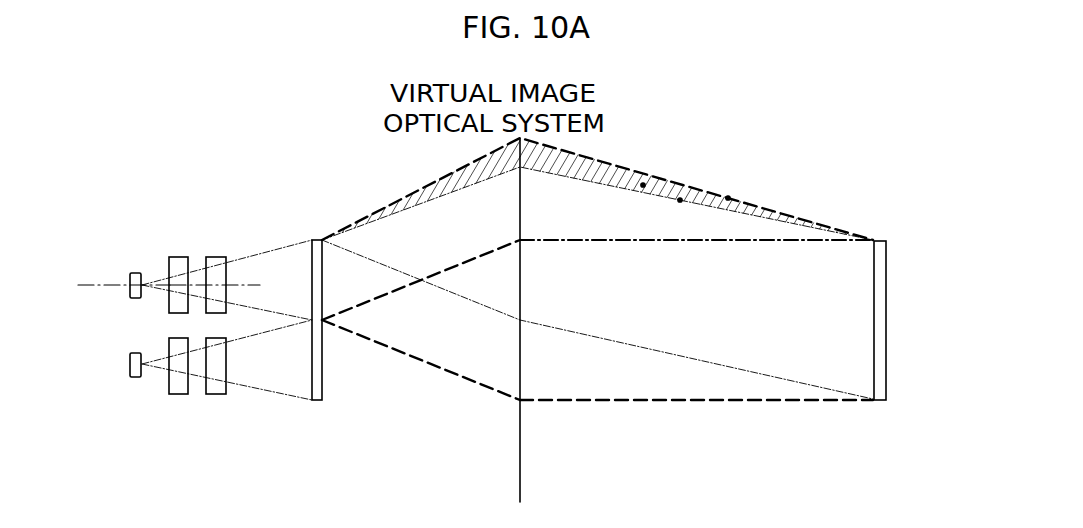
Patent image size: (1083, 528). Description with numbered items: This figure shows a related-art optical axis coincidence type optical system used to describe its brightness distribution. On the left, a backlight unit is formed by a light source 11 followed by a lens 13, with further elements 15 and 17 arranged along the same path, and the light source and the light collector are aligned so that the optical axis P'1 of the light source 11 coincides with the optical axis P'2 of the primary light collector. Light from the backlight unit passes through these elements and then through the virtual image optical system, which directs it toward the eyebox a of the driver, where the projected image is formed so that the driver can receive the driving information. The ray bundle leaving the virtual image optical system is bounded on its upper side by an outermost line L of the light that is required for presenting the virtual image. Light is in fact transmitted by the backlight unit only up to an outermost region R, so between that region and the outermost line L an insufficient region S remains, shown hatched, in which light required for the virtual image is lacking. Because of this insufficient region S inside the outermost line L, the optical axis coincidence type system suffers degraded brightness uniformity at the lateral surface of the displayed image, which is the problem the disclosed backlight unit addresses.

The light source 11 is at (136, 378).
The lens 13 is at (176, 395).
The second lens 15 is at (213, 395).
The intermediate image plane / relay element 17 is at (317, 401).
The eyebox a is at (874, 378).
The optical axis of the light source P'1 is at (120, 246).
The optical axis of the primary light collector P'2 is at (215, 246).
The outermost region R is at (643, 183).
The insufficient region S is at (680, 198).
The outermost line of light L is at (728, 196).